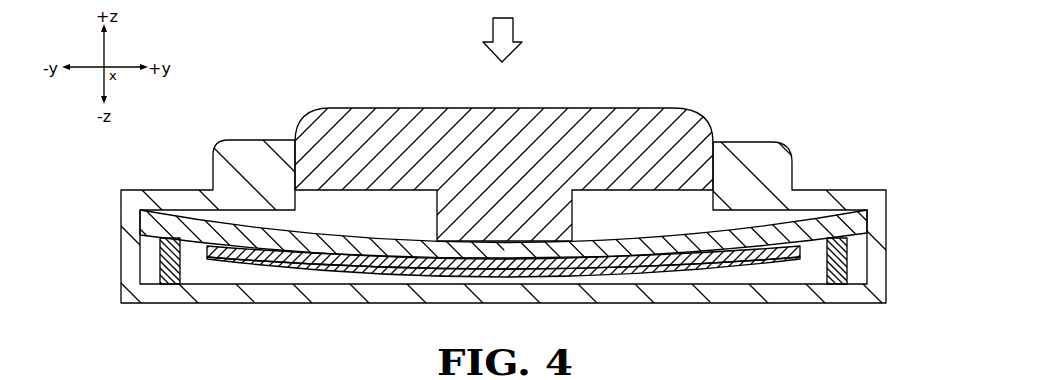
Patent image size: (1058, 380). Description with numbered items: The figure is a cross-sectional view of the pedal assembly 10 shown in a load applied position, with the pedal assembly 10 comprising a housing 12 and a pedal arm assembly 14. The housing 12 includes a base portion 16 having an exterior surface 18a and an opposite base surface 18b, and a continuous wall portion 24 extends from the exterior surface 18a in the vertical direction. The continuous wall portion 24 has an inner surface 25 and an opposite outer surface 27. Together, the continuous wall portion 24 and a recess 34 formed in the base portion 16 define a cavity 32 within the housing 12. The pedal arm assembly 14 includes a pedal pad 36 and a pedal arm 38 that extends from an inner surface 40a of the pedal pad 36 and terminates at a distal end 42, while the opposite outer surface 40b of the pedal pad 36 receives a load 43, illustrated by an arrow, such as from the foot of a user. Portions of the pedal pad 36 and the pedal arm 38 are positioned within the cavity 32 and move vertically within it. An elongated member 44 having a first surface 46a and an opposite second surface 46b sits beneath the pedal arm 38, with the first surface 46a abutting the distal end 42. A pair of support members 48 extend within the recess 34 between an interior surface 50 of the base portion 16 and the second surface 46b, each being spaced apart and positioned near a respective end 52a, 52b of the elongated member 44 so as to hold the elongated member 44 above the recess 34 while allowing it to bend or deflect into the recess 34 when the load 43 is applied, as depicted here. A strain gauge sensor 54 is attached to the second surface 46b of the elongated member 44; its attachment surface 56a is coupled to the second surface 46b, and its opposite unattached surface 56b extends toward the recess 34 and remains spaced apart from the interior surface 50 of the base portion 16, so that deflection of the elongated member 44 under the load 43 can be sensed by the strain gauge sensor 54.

The pedal assembly 10 is at (849, 64).
The housing 12 is at (245, 66).
The pedal arm assembly 14 is at (729, 64).
The base portion 16 is at (90, 303).
The exterior surface 18a is at (158, 190).
The base surface 18b is at (247, 305).
The continuous wall portion 24 is at (250, 140).
The inner surface 25 is at (300, 192).
The outer surface 27 is at (217, 155).
The cavity 32 is at (343, 188).
The recess 34 is at (278, 281).
The pedal pad 36 is at (598, 107).
The pedal arm 38 is at (556, 226).
The inner surface 40a is at (412, 200).
The outer surface 40b is at (453, 107).
The distal end 42 is at (440, 250).
The load 43 is at (521, 44).
The elongated member 44 is at (846, 182).
The first surface 46a is at (630, 238).
The second surface 46b is at (662, 265).
The support members 48 is at (160, 264).
The interior surface 50 is at (384, 268).
The first end 52a is at (142, 232).
The second end 52b is at (868, 225).
The strain gauge sensor 54 is at (607, 277).
The attachment surface 56a is at (720, 250).
The unattached surface 56b is at (753, 265).